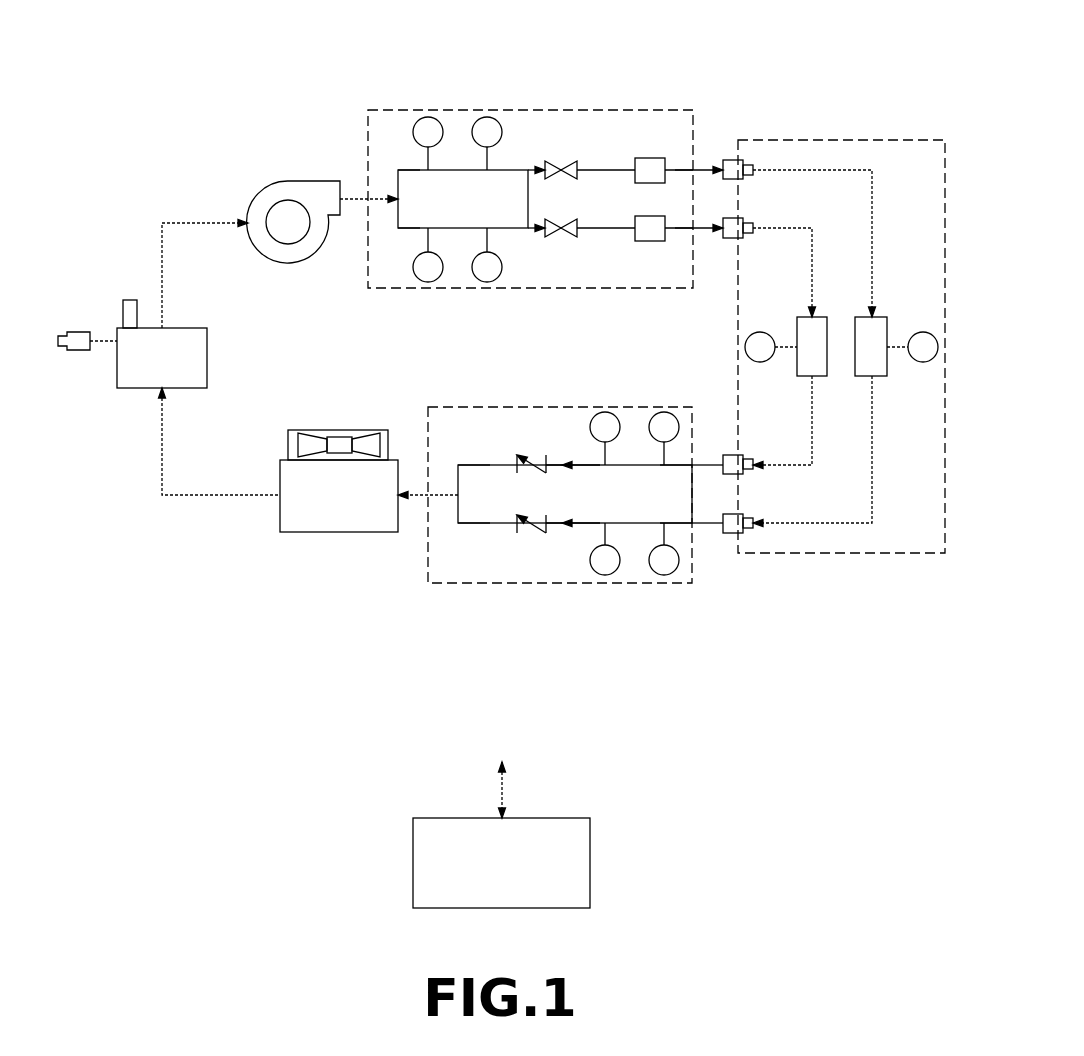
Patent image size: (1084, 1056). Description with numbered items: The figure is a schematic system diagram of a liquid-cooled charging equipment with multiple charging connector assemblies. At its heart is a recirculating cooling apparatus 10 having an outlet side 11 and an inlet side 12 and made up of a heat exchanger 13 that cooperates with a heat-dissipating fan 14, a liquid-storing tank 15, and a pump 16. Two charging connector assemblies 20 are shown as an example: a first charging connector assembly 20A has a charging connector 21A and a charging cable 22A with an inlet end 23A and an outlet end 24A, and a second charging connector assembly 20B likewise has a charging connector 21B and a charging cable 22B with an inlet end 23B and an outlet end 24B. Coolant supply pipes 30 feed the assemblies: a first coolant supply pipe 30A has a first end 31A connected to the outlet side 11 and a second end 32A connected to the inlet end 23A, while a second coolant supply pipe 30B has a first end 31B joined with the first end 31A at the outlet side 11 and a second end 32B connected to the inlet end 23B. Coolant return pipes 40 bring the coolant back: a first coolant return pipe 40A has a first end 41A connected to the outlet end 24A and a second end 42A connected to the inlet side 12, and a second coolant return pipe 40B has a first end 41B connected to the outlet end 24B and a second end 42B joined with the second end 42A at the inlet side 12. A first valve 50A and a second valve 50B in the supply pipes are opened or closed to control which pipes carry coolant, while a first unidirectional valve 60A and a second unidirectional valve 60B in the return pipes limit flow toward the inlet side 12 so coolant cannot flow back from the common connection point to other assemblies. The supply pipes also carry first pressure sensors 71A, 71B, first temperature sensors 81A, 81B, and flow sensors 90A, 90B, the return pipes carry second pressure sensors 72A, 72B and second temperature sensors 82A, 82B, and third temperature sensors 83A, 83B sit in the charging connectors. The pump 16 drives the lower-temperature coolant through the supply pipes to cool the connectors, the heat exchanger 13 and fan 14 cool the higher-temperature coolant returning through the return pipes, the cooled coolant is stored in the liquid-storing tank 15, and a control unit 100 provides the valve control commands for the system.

The recirculating cooling apparatus 10 is at (168, 146).
The outlet side 11 is at (355, 199).
The inlet side 12 is at (422, 497).
The heat exchanger 13 is at (288, 513).
The heat-dissipating fan 14 is at (338, 430).
The liquid-storing tank 15 is at (117, 362).
The pump 16 is at (288, 190).
The charging connector assemblies 20 is at (843, 147).
The first charging connector assembly 20A is at (892, 487).
The second charging connector assembly 20B is at (827, 487).
The charging connector 21A is at (883, 355).
The charging connector 21B is at (823, 355).
The charging cable 22A is at (872, 245).
The charging cable 22B is at (812, 272).
The inlet end 23A is at (733, 160).
The inlet end 23B is at (733, 238).
The outlet end 24A is at (733, 533).
The outlet end 24B is at (733, 455).
The coolant supply pipes 30 is at (560, 110).
The first coolant supply pipe 30A is at (517, 143).
The second coolant supply pipe 30B is at (518, 257).
The first end 31A is at (410, 170).
The first end 31B is at (410, 228).
The second end 32A is at (685, 170).
The second end 32B is at (685, 230).
The coolant return pipes 40 is at (435, 585).
The first coolant return pipe 40A is at (576, 545).
The second coolant return pipe 40B is at (570, 448).
The first end 41A is at (677, 525).
The first end 41B is at (677, 463).
The second end 42A is at (488, 525).
The second end 42B is at (488, 463).
The first valve 50A is at (565, 165).
The second valve 50B is at (565, 232).
The first unidirectional valve 60A is at (533, 532).
The second unidirectional valve 60B is at (533, 457).
The first pressure sensor 71A is at (428, 117).
The first pressure sensor 71B is at (428, 282).
The second pressure sensor 72A is at (605, 572).
The second pressure sensor 72B is at (605, 412).
The first temperature sensor 81A is at (487, 117).
The first temperature sensor 81B is at (487, 282).
The second temperature sensor 82A is at (664, 572).
The second temperature sensor 82B is at (664, 412).
The third temperature sensor 83A is at (925, 333).
The third temperature sensor 83B is at (757, 335).
The flow sensor 90A is at (650, 165).
The flow sensor 90B is at (650, 235).
The control unit 100 is at (505, 906).